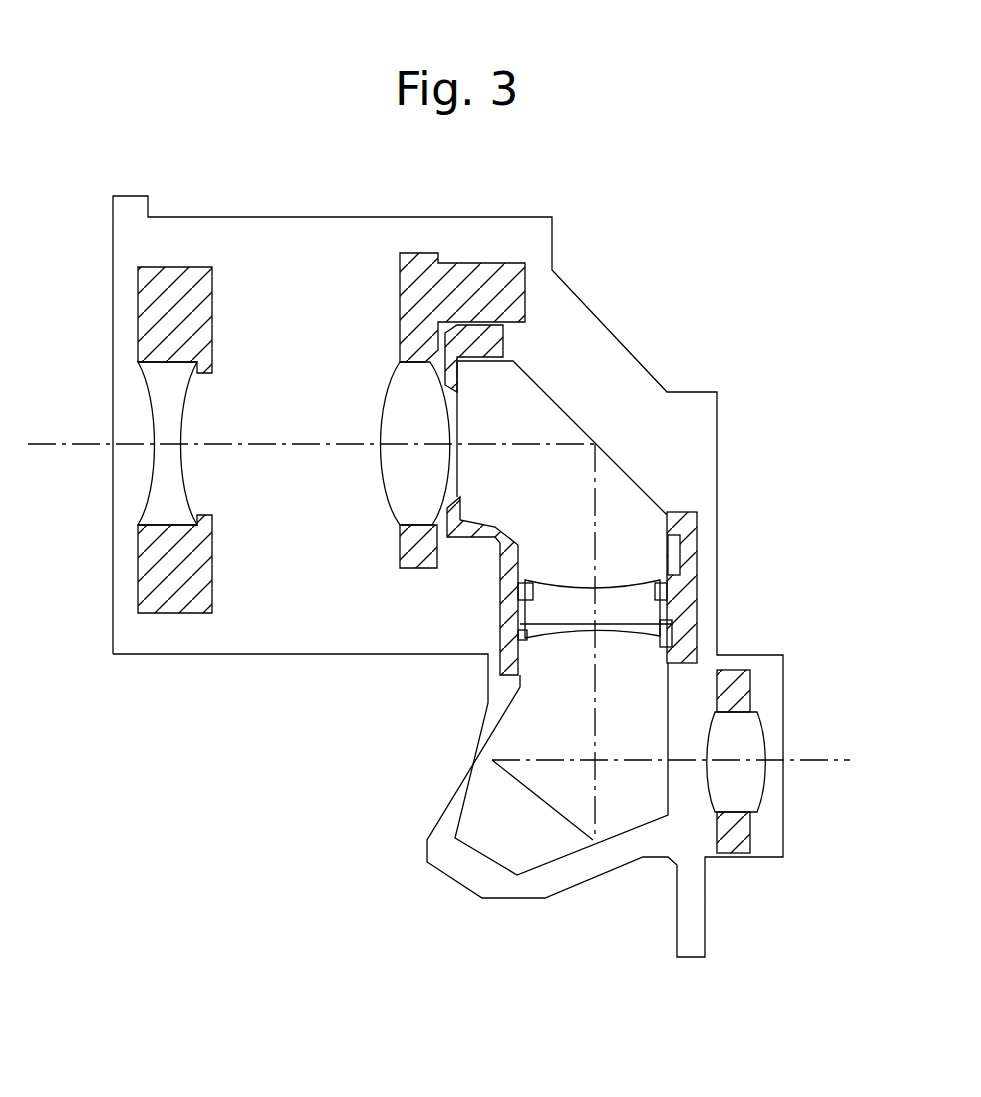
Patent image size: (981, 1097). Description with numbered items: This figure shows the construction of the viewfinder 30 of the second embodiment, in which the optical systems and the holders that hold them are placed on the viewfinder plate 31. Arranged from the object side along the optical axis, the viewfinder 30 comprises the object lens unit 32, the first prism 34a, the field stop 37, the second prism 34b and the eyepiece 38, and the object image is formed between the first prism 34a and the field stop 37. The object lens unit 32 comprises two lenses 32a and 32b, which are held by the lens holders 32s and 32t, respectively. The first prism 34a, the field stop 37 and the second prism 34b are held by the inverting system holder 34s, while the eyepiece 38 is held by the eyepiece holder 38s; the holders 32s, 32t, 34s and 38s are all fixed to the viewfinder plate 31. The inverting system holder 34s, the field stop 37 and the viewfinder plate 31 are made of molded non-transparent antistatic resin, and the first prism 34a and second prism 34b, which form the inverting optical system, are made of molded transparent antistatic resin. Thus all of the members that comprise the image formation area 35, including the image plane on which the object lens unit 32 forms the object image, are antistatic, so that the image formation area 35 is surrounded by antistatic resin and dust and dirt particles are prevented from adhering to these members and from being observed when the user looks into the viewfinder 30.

The viewfinder 30 is at (722, 294).
The viewfinder plate 31 is at (597, 317).
The object lens unit 32 is at (220, 717).
The lens 32a is at (182, 477).
The lens 32b is at (383, 493).
The lens holder 32s is at (172, 613).
The lens holder 32t is at (418, 570).
The first prism 34a is at (627, 476).
The second prism 34b is at (668, 683).
The inverting system holder 34s is at (697, 538).
The image formation area 35 is at (522, 613).
The field stop 37 is at (633, 613).
The eyepiece 38 is at (765, 793).
The eyepiece holder 38s is at (737, 855).